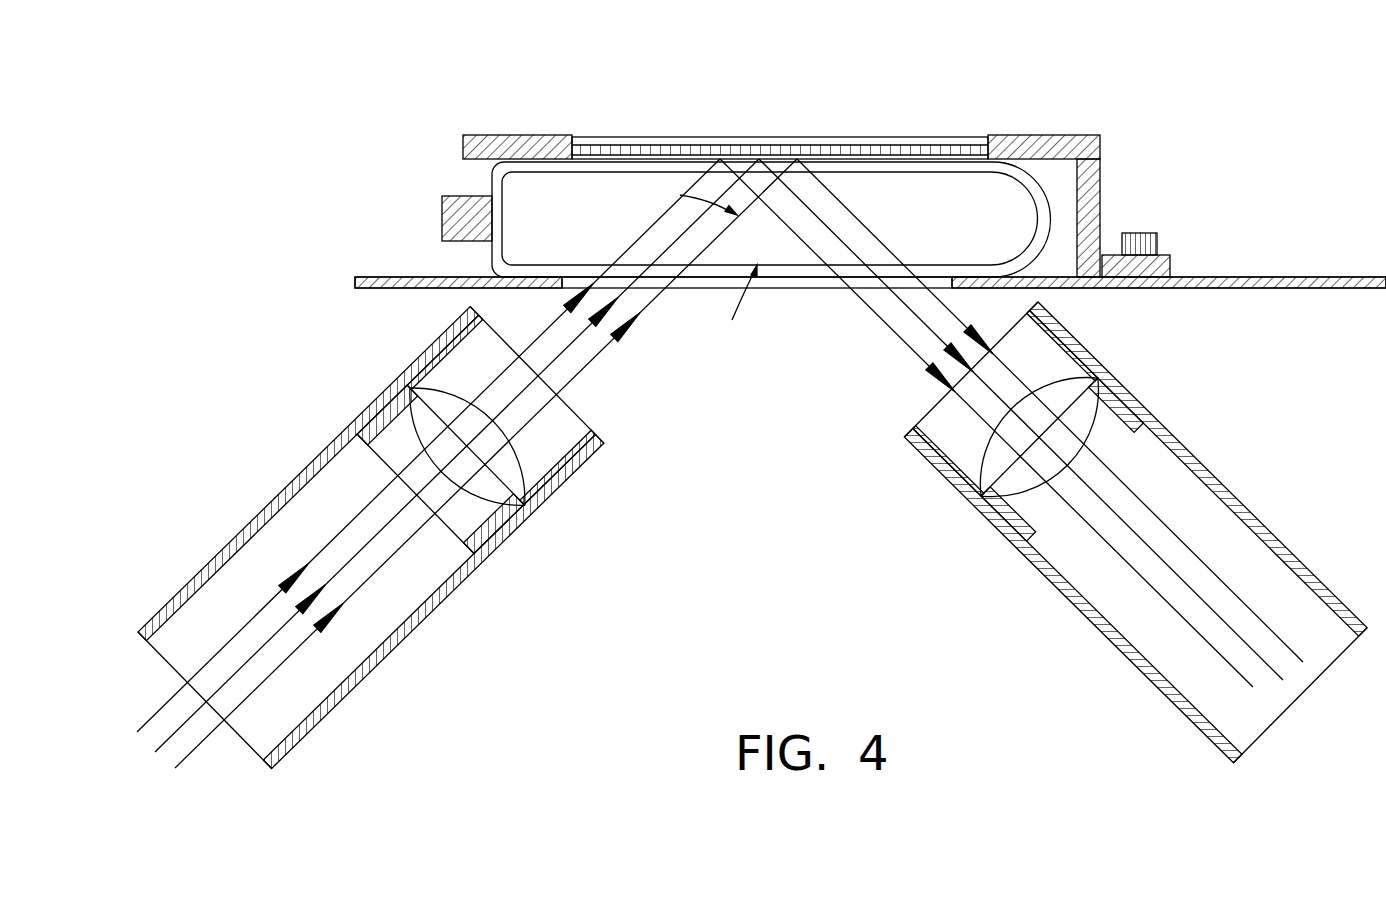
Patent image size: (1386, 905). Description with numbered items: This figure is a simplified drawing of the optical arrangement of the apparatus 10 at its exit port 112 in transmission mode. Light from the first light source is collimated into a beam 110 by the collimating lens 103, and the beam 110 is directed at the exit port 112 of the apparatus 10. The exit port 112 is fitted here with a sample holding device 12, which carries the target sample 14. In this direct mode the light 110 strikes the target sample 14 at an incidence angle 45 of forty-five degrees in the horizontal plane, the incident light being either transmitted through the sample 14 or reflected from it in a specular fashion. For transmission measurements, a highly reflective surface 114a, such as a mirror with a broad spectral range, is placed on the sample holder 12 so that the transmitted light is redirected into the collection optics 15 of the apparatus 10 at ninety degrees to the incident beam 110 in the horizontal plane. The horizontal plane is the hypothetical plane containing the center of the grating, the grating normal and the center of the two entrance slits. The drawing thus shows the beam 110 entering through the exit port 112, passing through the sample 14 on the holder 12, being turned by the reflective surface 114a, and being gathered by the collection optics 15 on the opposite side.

The apparatus 10 is at (1205, 275).
The sample holding device 12 is at (1100, 135).
The target sample 14 is at (938, 182).
The highly reflective surface 114a is at (821, 84).
The exit port 112 is at (817, 293).
The beam 110 is at (625, 331).
The collimating lens 103 is at (497, 507).
The collection optics 15 is at (1082, 418).
The 45 degree angle 45 is at (726, 226).